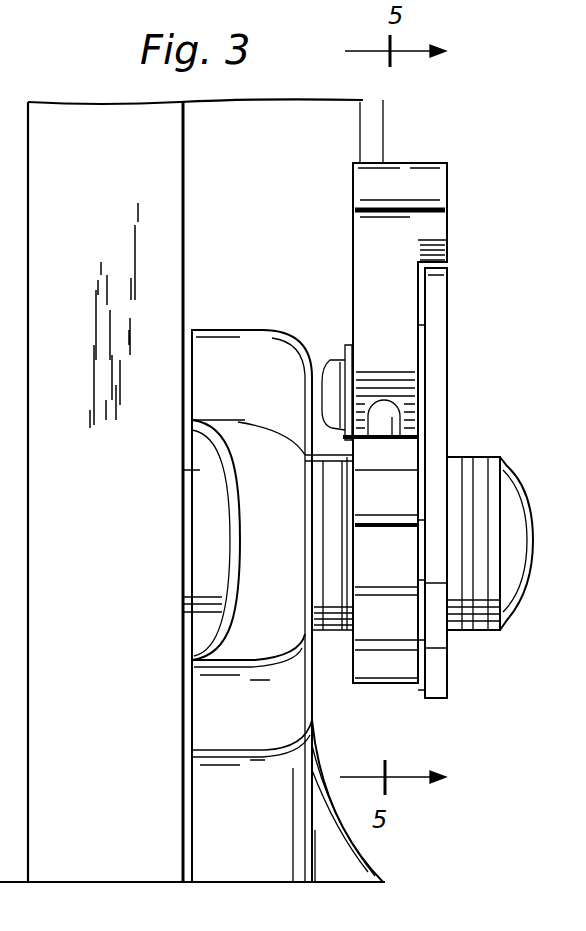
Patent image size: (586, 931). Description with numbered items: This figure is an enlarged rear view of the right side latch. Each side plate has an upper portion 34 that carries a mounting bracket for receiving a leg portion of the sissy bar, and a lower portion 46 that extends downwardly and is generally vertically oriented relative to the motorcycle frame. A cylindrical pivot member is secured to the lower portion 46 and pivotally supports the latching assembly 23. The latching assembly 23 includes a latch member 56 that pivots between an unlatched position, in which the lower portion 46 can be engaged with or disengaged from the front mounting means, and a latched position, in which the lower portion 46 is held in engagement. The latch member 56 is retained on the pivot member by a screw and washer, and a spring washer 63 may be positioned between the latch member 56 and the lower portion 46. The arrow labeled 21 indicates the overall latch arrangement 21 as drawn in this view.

The fastener assembly 21 is at (532, 474).
The mounting bracket 23 is at (298, 264).
The panel flange 34 is at (370, 118).
The washer plate 46 is at (437, 397).
The nut block 56 is at (435, 228).
The shim 63 is at (422, 350).